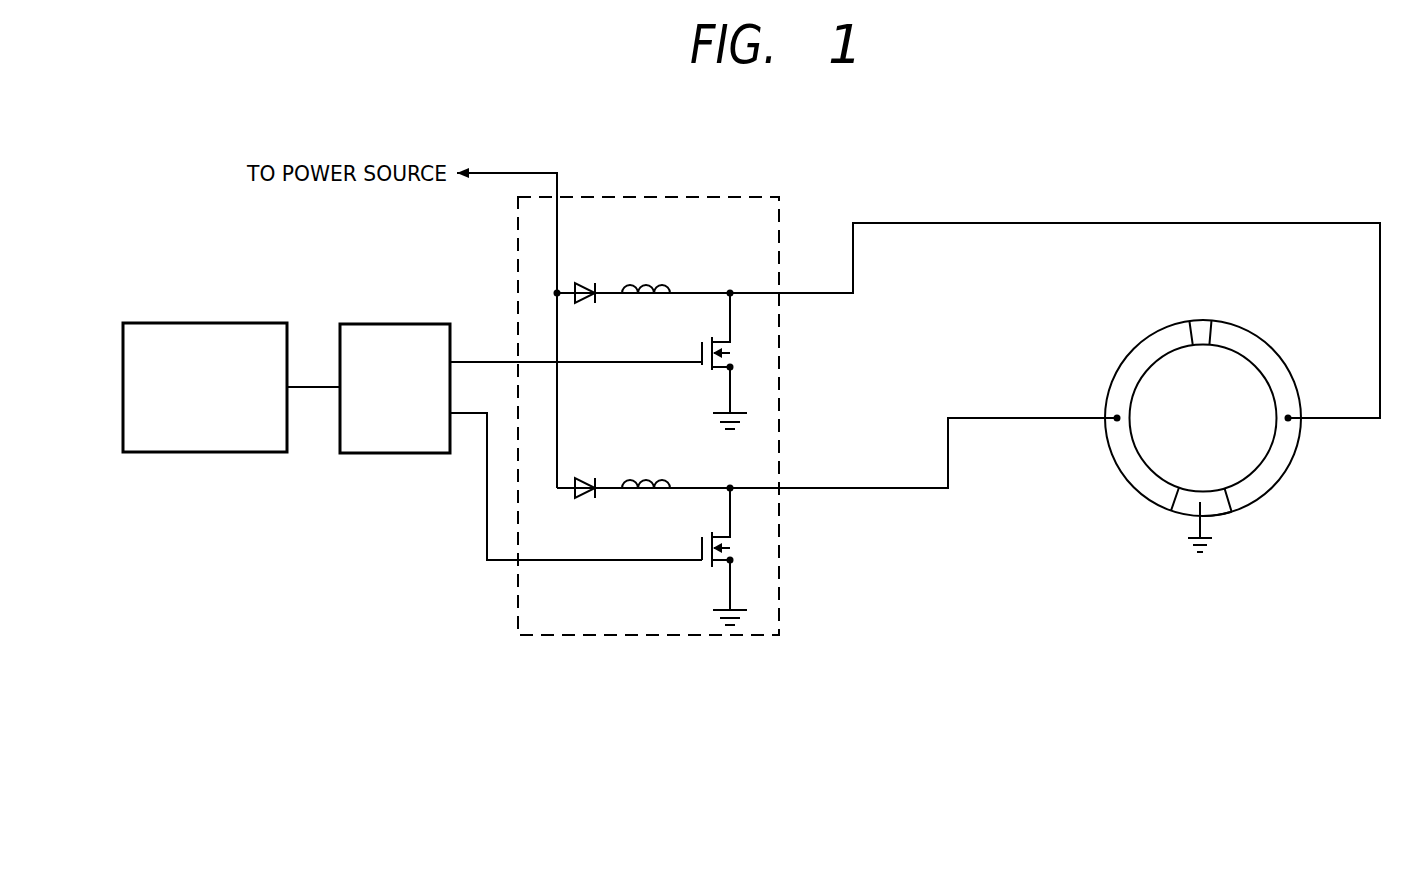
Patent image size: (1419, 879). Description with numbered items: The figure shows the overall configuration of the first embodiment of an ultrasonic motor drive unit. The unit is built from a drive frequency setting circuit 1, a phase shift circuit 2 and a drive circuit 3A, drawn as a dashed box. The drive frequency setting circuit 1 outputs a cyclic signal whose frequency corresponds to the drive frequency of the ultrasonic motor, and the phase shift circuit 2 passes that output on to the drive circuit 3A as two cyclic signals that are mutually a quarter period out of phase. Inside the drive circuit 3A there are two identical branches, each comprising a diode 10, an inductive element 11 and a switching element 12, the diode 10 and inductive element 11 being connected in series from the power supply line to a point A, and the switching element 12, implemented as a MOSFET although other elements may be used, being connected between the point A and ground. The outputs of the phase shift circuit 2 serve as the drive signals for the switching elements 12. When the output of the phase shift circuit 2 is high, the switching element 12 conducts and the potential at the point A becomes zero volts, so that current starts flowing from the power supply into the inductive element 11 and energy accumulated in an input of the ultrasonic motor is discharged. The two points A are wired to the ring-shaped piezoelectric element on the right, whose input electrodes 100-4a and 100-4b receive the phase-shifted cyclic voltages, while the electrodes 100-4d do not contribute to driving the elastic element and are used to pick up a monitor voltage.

The drive frequency setting circuit 1 is at (264, 322).
The phase shift circuit 2 is at (435, 322).
The drive circuit 3A is at (744, 193).
The diode 10 is at (592, 280).
The inductive element 11 is at (659, 280).
The switching element 12 is at (702, 340).
The point A is at (732, 286).
The electrode 100-4b is at (1122, 448).
The electrode 100-4d is at (1205, 325).
The electrode 100-4a is at (1245, 492).